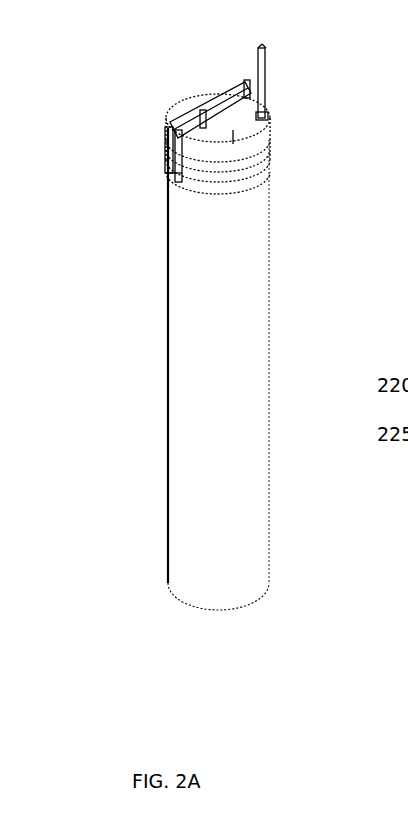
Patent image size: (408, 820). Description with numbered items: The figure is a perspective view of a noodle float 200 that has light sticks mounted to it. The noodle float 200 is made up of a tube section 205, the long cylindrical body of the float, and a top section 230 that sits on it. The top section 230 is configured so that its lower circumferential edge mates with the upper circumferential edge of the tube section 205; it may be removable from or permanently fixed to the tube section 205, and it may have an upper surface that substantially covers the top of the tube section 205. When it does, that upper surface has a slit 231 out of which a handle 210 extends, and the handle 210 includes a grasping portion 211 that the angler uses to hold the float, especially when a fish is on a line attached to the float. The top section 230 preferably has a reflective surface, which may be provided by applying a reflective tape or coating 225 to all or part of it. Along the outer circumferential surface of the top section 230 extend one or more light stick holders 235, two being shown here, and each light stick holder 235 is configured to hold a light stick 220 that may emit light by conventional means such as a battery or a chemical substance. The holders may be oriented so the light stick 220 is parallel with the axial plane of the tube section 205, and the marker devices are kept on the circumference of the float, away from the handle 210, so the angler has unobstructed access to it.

The noodle float 200 is at (96, 83).
The tube section 205 is at (200, 366).
The handle 210 is at (217, 87).
The grasping portion 211 is at (215, 112).
The light stick 220 is at (266, 78).
The reflective tape or coating 225 is at (270, 160).
The top section 230 is at (233, 137).
The slit 231 is at (266, 116).
The light stick holder 235 is at (172, 170).